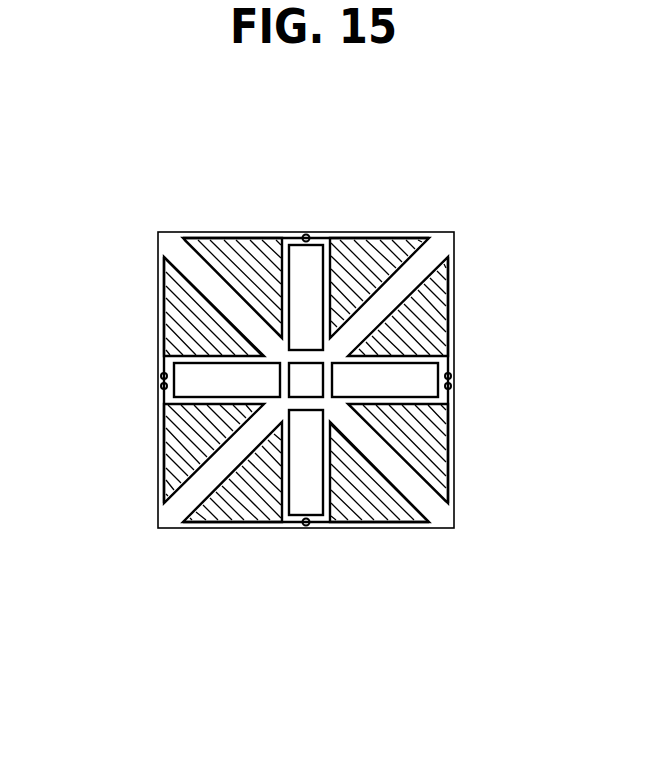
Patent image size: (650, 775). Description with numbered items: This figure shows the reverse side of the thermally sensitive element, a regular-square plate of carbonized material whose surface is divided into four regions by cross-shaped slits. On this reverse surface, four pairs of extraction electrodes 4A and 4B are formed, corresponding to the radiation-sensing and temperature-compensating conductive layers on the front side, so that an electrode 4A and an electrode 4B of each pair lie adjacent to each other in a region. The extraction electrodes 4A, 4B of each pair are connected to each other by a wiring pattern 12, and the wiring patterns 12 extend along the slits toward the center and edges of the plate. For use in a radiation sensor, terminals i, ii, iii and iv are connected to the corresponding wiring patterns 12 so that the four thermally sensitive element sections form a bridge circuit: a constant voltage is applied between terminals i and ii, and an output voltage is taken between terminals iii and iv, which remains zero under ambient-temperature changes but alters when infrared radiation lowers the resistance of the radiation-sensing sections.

The extraction electrode 4A is at (225, 242).
The extraction electrode 4B is at (390, 238).
The wiring pattern 12 is at (322, 235).
The terminal i is at (306, 525).
The terminal ii is at (305, 235).
The terminal iii is at (162, 377).
The terminal iv is at (452, 365).